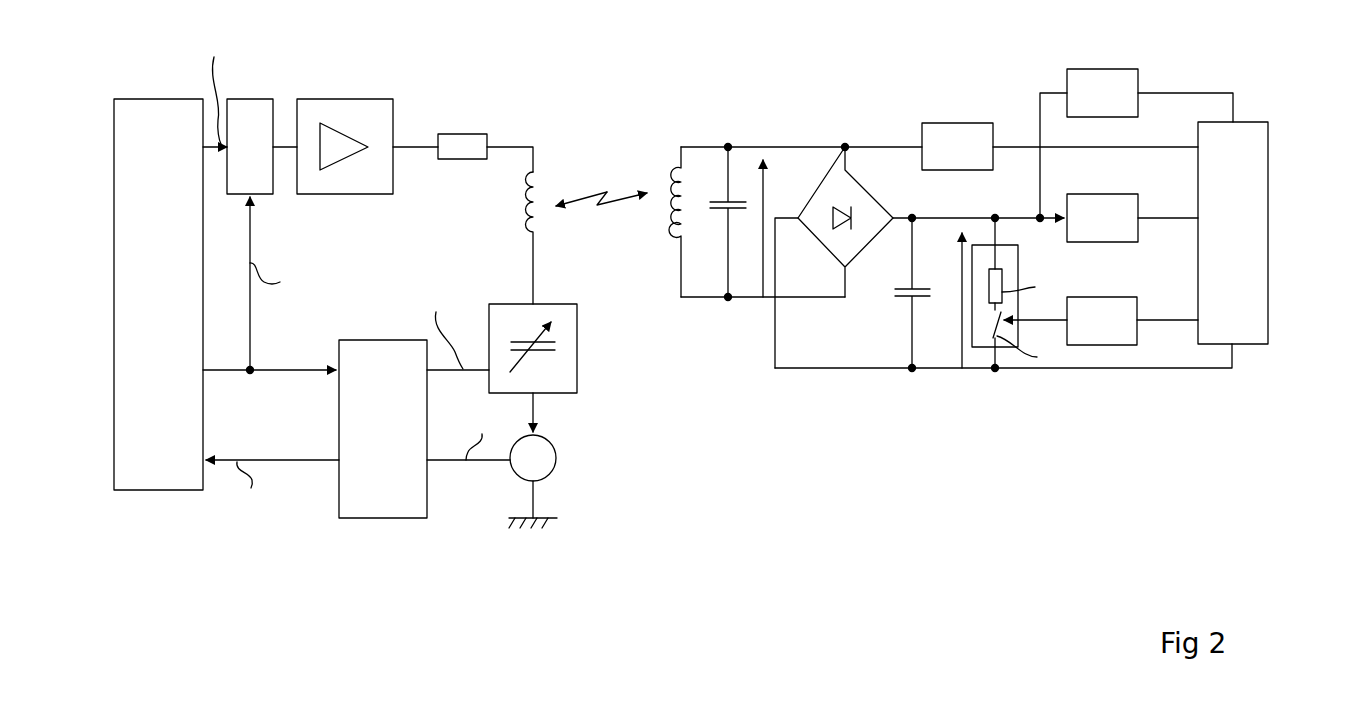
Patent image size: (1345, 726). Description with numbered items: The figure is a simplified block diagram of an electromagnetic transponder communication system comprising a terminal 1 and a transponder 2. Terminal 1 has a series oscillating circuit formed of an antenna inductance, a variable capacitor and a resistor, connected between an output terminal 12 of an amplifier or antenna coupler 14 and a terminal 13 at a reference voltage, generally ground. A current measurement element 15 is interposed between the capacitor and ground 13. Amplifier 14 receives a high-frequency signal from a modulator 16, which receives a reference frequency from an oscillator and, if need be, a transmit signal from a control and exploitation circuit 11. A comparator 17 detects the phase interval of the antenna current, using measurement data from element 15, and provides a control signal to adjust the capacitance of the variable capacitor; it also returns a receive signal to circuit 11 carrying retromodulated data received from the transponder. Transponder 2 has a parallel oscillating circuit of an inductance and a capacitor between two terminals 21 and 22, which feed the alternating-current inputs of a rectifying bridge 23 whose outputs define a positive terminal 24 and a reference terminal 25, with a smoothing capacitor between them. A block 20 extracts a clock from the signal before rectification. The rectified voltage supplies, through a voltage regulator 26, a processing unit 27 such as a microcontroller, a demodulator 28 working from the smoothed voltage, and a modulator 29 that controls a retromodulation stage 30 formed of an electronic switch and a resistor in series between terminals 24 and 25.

The terminal 1 is at (297, 556).
The transponder 2 is at (875, 483).
The circuit for controlling and exploiting the transmissions 11 is at (156, 99).
The output terminal 12 is at (415, 148).
The terminal at a reference voltage 13 is at (538, 508).
The amplifier or antenna coupler 14 is at (346, 99).
The element for measuring the current 15 is at (557, 462).
The modulator 16 is at (248, 99).
The comparator 17 is at (366, 518).
The clock extraction block 20 is at (948, 123).
The first terminal of the parallel oscillating circuit 21 is at (729, 147).
The second terminal of the parallel oscillating circuit 22 is at (728, 300).
The rectifying bridge 23 is at (866, 196).
The positive terminal 24 is at (913, 218).
The reference terminal 25 is at (910, 372).
The voltage regulator 26 is at (1122, 69).
The processing unit 27 is at (1268, 166).
The demodulator 28 is at (1095, 194).
The modulator 29 is at (1091, 297).
The retromodulation stage 30 is at (1018, 263).